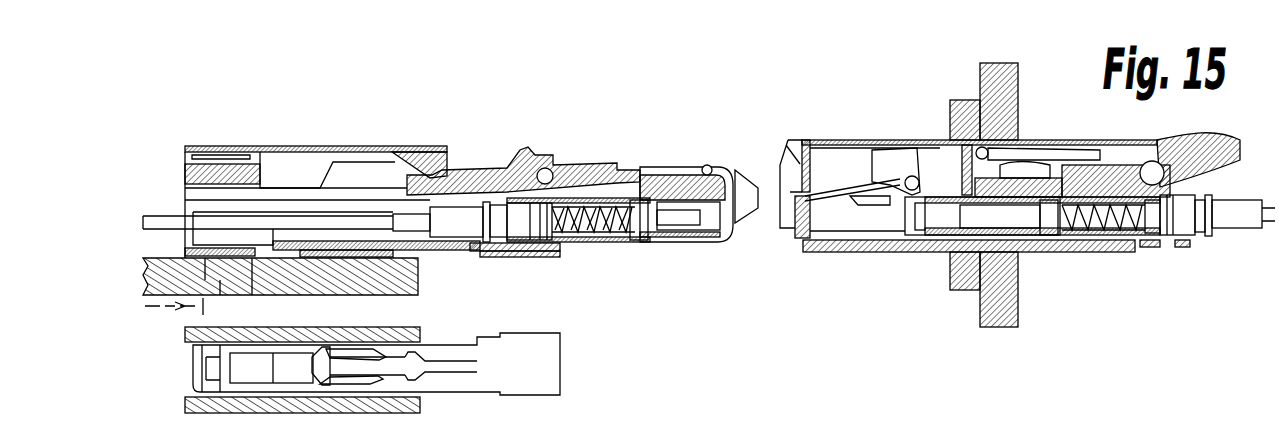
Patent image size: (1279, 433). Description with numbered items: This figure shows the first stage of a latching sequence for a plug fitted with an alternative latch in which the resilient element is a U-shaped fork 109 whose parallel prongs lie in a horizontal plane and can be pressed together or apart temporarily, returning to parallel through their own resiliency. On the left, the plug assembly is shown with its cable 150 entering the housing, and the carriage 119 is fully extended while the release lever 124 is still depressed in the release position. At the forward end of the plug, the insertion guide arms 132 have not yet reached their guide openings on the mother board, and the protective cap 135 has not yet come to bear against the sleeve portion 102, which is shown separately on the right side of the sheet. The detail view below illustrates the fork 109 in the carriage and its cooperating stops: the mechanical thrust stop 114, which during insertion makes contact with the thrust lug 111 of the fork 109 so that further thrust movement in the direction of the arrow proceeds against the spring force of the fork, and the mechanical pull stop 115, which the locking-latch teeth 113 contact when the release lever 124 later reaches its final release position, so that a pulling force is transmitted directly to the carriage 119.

The sleeve portion 102 is at (882, 108).
The fork 109 is at (183, 381).
The thrust lug 111 is at (375, 350).
The locking-latch teeth 113 is at (325, 355).
The mechanical thrust stop 114 is at (420, 355).
The mechanical pull stop 115 is at (313, 360).
The carriage 119 is at (495, 257).
The release lever 124 is at (470, 185).
The insertion guide arms 132 is at (747, 172).
The protective cap 135 is at (728, 242).
The cable 150 is at (372, 215).